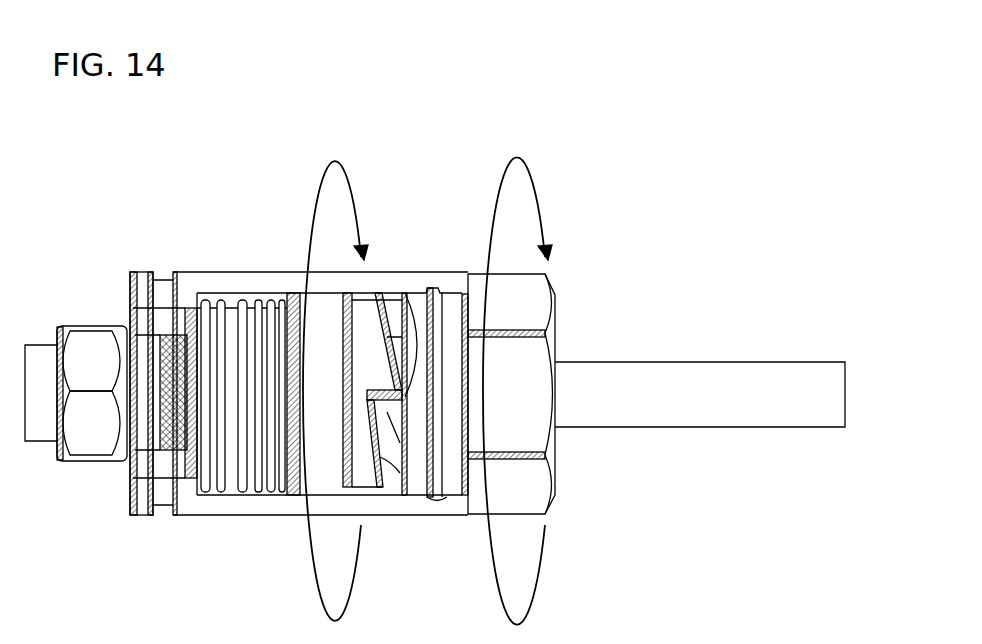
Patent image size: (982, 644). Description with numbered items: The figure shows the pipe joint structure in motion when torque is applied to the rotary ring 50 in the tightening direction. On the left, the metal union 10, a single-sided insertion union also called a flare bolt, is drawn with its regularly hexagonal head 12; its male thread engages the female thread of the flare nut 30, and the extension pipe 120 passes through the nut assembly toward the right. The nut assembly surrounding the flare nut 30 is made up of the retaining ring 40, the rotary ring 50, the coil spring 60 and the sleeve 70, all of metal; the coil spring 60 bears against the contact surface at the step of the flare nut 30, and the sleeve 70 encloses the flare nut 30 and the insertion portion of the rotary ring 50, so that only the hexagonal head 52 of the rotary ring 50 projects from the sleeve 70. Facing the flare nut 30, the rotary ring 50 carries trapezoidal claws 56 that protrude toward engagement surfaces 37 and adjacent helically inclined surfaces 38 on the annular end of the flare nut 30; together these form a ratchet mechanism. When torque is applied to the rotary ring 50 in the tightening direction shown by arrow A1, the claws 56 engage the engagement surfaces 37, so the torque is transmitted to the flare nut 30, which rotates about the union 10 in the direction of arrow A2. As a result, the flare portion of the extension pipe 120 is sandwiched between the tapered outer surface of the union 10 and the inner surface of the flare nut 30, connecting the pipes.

The union 10 is at (104, 293).
The head 12 is at (88, 331).
The flare nut 30 is at (325, 313).
The engagement surface 37 is at (417, 360).
The helically inclined surface 38 is at (387, 472).
The retaining ring 40 is at (441, 290).
The rotary ring 50 is at (477, 252).
The head 52 is at (478, 513).
The claw 56 is at (406, 475).
The coil spring 60 is at (215, 295).
The sleeve 70 is at (247, 272).
The extension pipe 120 is at (725, 367).
The arrow A1 is at (526, 391).
The arrow A2 is at (343, 388).